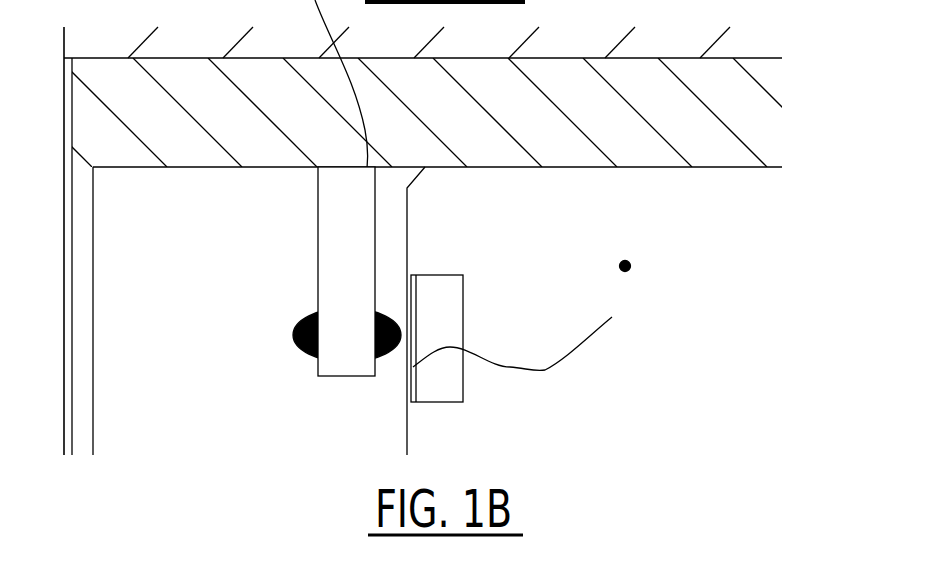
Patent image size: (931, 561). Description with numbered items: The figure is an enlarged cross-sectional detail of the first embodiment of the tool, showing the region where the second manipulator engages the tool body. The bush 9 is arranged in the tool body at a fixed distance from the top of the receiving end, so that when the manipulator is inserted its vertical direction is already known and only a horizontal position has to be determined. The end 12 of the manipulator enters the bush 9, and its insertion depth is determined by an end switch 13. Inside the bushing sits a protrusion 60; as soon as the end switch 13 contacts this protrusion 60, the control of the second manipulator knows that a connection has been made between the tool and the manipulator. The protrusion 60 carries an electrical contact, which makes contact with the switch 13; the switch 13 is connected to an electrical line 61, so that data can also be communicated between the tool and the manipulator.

The bush 9 is at (662, 110).
The end of the manipulator 12 is at (625, 266).
The end switch 13 is at (413, 388).
The protrusion 60 is at (300, 318).
The electrical line 61 is at (507, 360).